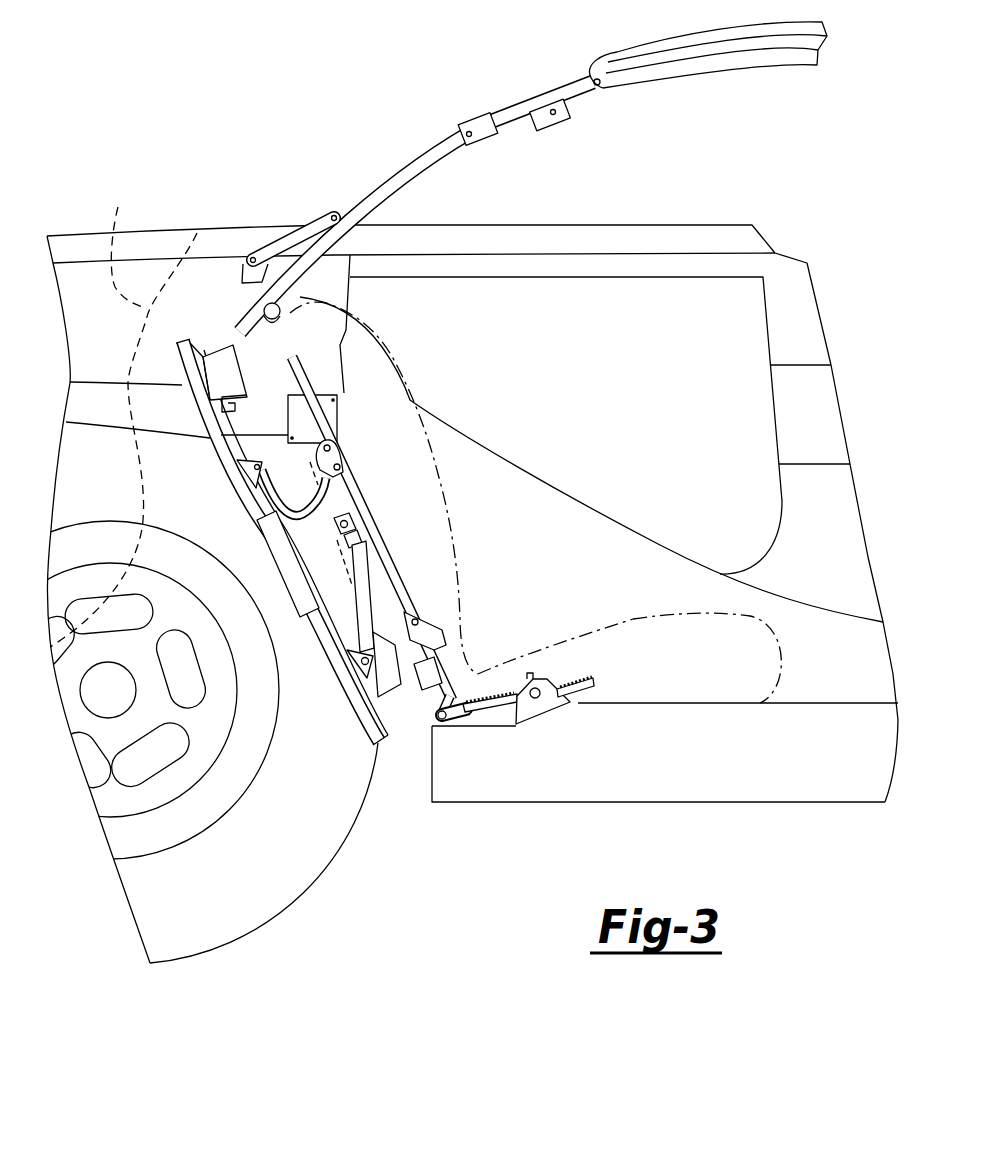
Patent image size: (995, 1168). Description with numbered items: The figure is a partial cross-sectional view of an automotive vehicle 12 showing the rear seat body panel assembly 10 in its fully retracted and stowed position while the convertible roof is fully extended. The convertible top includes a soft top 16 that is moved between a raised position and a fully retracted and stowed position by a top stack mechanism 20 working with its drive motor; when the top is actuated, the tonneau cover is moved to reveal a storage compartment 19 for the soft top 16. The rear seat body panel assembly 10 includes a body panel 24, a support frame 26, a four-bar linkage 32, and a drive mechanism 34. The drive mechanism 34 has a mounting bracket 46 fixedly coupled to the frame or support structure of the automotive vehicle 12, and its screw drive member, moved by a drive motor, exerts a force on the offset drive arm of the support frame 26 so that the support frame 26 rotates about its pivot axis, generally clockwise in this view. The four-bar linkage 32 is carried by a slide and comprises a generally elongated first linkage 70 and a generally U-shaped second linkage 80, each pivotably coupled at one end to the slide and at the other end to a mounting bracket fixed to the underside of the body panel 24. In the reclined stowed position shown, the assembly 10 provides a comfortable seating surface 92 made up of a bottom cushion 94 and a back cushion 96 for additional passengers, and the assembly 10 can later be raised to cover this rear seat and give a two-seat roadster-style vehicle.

The rear seat body panel assembly 10 is at (88, 137).
The automotive vehicle 12 is at (247, 233).
The soft top 16 is at (565, 88).
The storage compartment 19 is at (123, 411).
The top stack mechanism 20 is at (392, 182).
The body panel 24 is at (212, 452).
The support frame 26 is at (270, 311).
The four-bar linkage 32 is at (353, 535).
The drive mechanism 34 is at (553, 722).
The mounting bracket 46 is at (582, 703).
The first linkage 70 is at (356, 507).
The second linkage 80 is at (341, 445).
The seating surface 92 is at (448, 505).
The bottom cushion 94 is at (573, 630).
The back cushion 96 is at (382, 347).